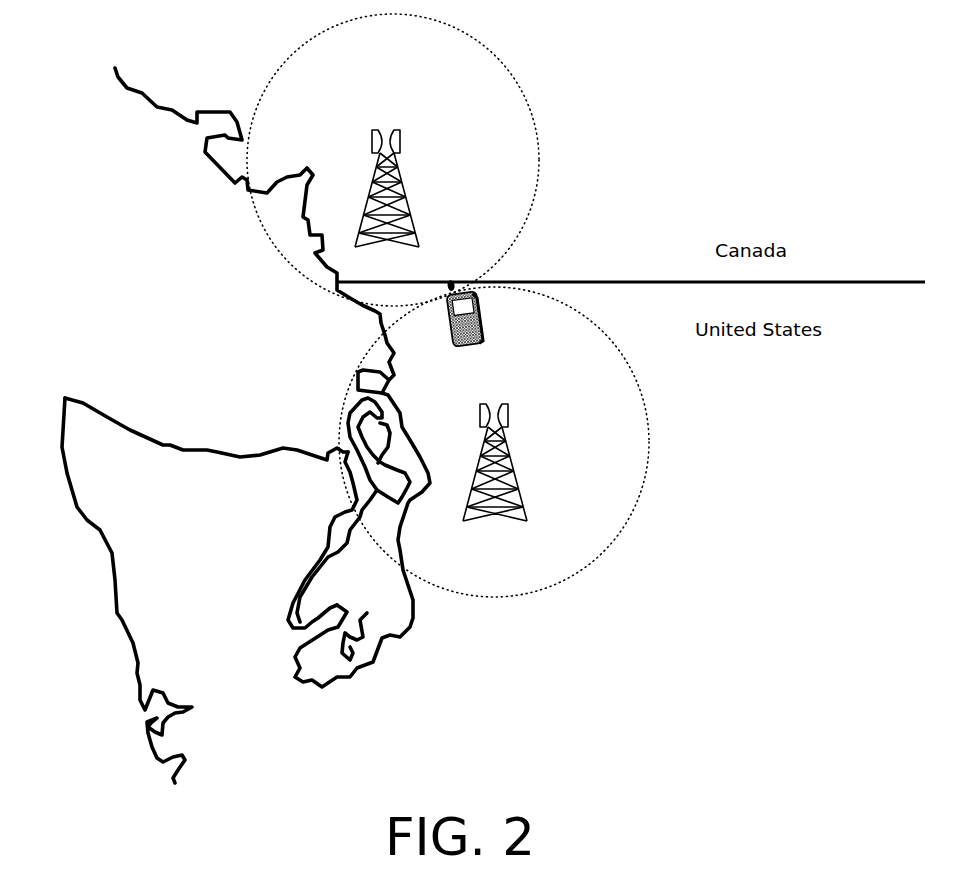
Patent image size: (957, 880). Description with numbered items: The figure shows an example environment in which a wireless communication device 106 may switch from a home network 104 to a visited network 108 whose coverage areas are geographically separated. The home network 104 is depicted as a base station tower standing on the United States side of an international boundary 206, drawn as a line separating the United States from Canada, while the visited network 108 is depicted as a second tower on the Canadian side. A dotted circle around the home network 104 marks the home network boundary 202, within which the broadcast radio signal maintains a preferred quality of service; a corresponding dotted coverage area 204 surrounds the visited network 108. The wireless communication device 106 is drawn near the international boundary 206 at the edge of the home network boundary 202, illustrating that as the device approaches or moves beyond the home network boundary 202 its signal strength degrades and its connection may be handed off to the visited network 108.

The home network 104 is at (572, 465).
The wireless communication device 106 is at (482, 327).
The visited network 108 is at (463, 190).
The home network boundary 202 is at (638, 495).
The coverage area of base station 108 204 is at (540, 162).
The international boundary 206 is at (830, 282).